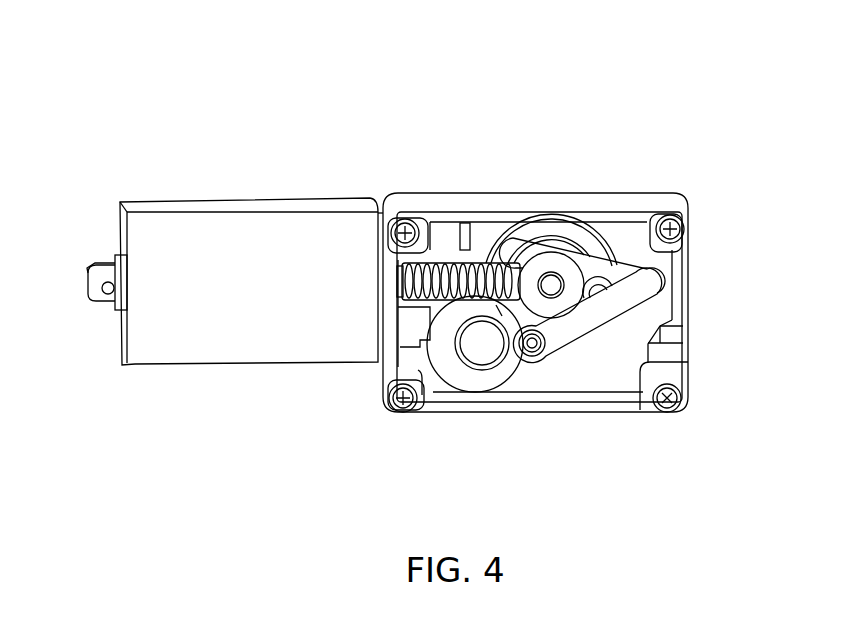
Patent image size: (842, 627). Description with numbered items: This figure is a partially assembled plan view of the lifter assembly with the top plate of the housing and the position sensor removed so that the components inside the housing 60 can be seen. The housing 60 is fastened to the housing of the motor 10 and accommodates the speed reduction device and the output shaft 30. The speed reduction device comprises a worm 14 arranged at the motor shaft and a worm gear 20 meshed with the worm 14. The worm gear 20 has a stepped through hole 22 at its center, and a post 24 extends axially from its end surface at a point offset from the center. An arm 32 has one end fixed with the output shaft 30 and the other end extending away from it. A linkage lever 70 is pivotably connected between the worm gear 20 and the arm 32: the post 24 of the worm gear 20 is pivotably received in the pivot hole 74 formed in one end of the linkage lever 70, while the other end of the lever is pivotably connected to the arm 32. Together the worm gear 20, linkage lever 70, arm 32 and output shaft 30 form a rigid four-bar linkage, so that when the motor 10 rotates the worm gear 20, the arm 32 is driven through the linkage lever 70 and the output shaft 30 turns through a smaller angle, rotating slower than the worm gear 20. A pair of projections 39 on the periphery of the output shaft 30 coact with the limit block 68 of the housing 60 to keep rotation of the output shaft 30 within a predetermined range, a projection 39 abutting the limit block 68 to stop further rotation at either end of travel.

The motor 10 is at (221, 240).
The worm 14 is at (450, 263).
The worm gear 20 is at (480, 303).
The stepped through hole 22 is at (476, 347).
The post 24 is at (533, 350).
The output shaft 30 is at (552, 285).
The arm 32 is at (608, 268).
The projections 39 is at (525, 238).
The housing 60 is at (635, 410).
The limit block 68 is at (601, 243).
The linkage lever 70 is at (572, 323).
The pivot hole 74 is at (527, 353).